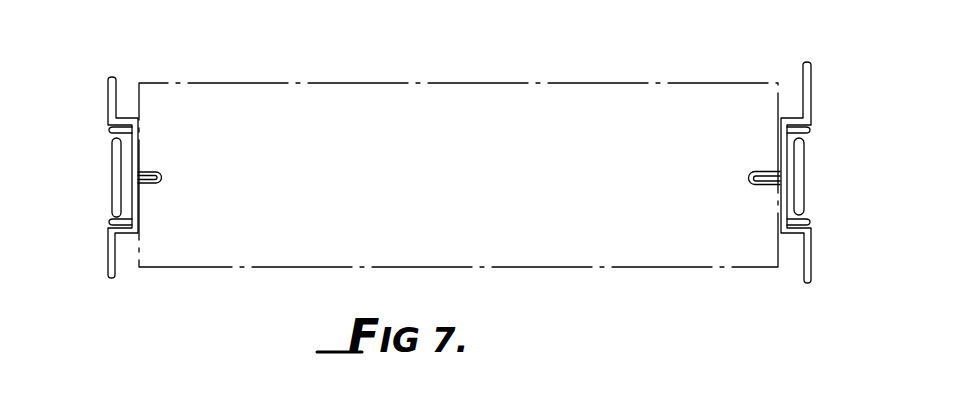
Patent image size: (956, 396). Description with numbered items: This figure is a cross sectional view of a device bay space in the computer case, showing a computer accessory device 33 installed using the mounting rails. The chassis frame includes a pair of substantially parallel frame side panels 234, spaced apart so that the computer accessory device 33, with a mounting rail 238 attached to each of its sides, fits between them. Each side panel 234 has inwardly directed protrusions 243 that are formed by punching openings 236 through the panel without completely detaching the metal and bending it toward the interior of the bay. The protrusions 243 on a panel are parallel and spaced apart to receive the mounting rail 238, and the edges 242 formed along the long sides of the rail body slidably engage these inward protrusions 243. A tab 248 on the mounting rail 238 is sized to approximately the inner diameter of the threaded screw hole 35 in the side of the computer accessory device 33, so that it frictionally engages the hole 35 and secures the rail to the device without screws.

The computer accessory device 33 is at (315, 83).
The threaded screw hole 35 is at (166, 170).
The frame side panel 234 is at (810, 172).
The opening 236 is at (812, 130).
The mounting rail 238 is at (115, 136).
The edge 242 is at (120, 219).
The protrusion 243 is at (810, 176).
The tab 248 is at (177, 178).